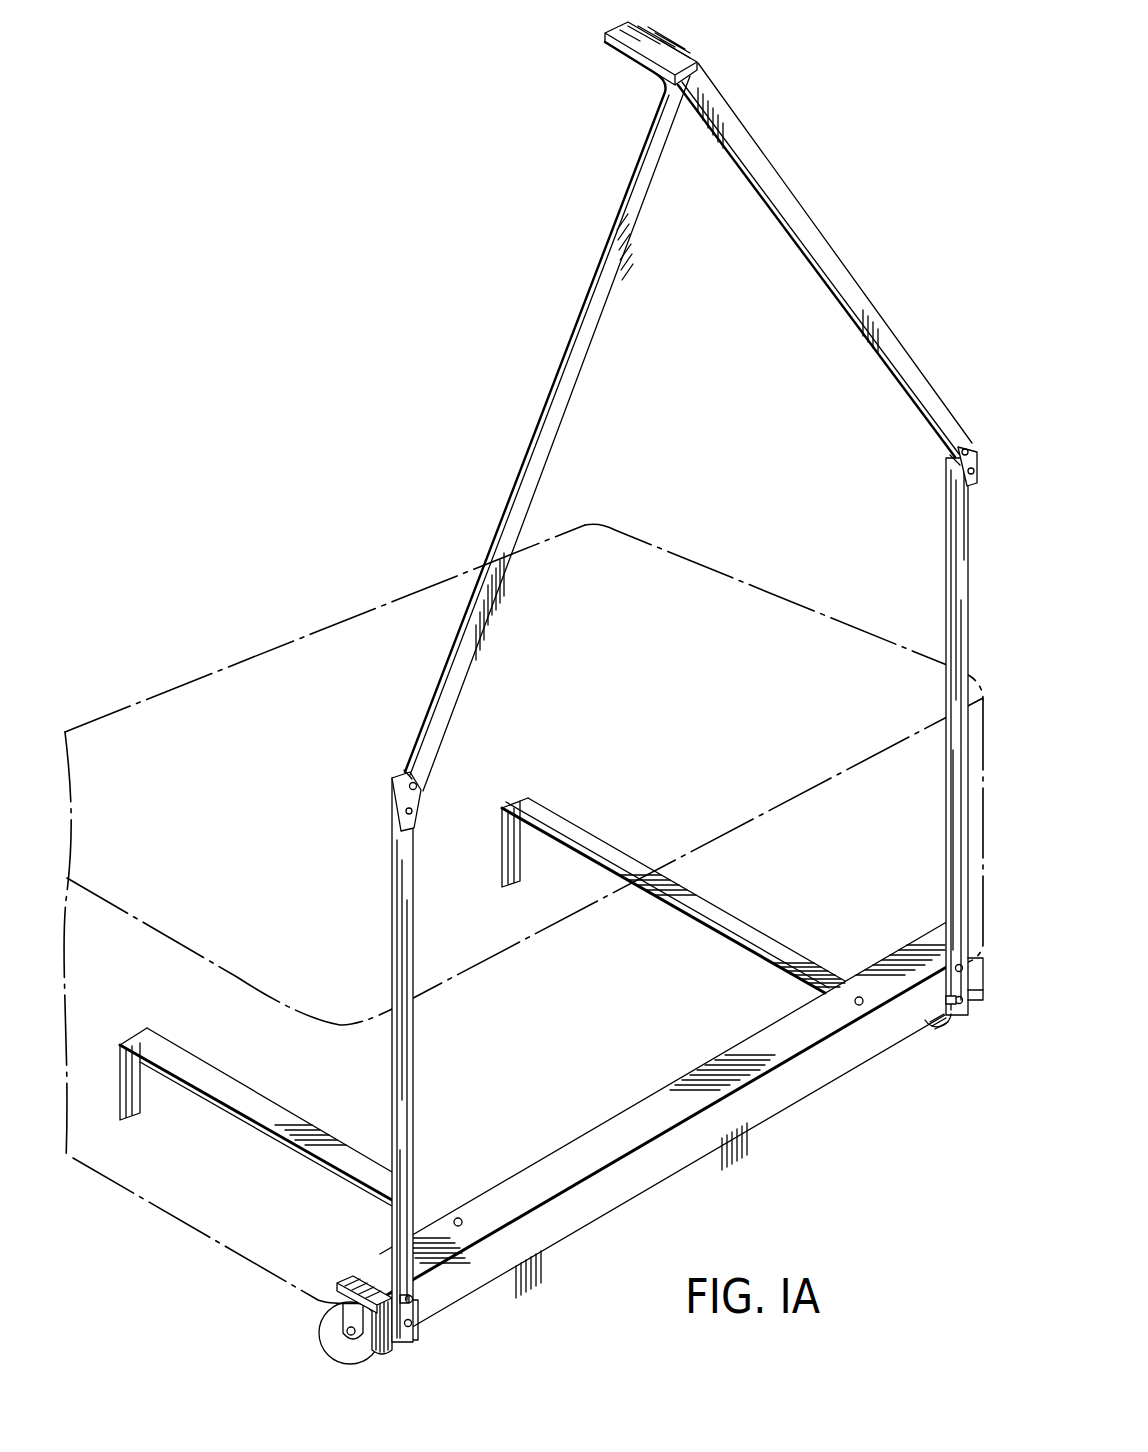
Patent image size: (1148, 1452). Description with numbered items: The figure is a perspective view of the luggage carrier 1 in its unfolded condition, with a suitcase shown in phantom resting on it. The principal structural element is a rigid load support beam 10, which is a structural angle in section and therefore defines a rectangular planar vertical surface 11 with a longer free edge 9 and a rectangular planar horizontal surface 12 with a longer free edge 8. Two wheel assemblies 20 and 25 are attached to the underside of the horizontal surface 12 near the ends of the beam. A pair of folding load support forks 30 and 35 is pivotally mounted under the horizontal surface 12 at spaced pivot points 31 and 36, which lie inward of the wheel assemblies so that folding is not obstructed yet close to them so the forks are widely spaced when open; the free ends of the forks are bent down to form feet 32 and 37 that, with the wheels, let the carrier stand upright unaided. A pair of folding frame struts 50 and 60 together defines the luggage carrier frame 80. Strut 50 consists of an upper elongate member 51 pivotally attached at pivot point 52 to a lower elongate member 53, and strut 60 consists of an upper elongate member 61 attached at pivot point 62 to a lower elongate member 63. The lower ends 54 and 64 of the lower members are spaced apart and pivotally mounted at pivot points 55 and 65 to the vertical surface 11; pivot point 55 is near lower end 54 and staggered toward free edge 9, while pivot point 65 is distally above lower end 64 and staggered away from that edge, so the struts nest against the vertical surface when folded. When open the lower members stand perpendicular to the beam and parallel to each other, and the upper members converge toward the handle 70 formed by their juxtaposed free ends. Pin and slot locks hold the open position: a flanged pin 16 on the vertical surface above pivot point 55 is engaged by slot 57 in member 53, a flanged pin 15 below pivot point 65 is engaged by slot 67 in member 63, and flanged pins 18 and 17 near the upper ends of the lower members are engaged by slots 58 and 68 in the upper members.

The luggage carrier 1 is at (438, 191).
The longer free edge of horizontal surface 8 is at (655, 1088).
The longer free edge of vertical surface 9 is at (674, 1166).
The load support beam 10 is at (710, 1158).
The vertical surface 11 is at (625, 1190).
The horizontal surface 12 is at (573, 1157).
The pin 15 is at (972, 993).
The pin 16 is at (420, 1299).
The flanged head pin 17 is at (979, 444).
The flanged head pin 18 is at (400, 770).
The wheel assembly 20 is at (343, 1347).
The wheel assembly 25 is at (933, 1036).
The folding load support fork 30 is at (292, 1118).
The pivot point 31 is at (461, 1217).
The foot 32 is at (142, 1102).
The folding load support fork 35 is at (613, 862).
The pivot point 36 is at (860, 996).
The foot 37 is at (500, 863).
The folding frame strut 50 is at (543, 393).
The upper elongate member 51 is at (535, 432).
The pivot point 52 is at (405, 813).
The lower elongate member 53 is at (393, 938).
The lower end 54 is at (402, 1340).
The pivot point 55 is at (412, 1324).
The slot 57 is at (355, 1280).
The slot 58 is at (423, 787).
The folding frame strut 60 is at (834, 242).
The upper elongate member 61 is at (850, 297).
The pivot point 62 is at (972, 472).
The lower elongate member 63 is at (946, 600).
The lower end 64 is at (960, 1006).
The pivot point 65 is at (948, 990).
The slot 67 is at (945, 1010).
The slot 68 is at (955, 461).
The handle 70 is at (642, 62).
The luggage carrier frame 80 is at (540, 330).